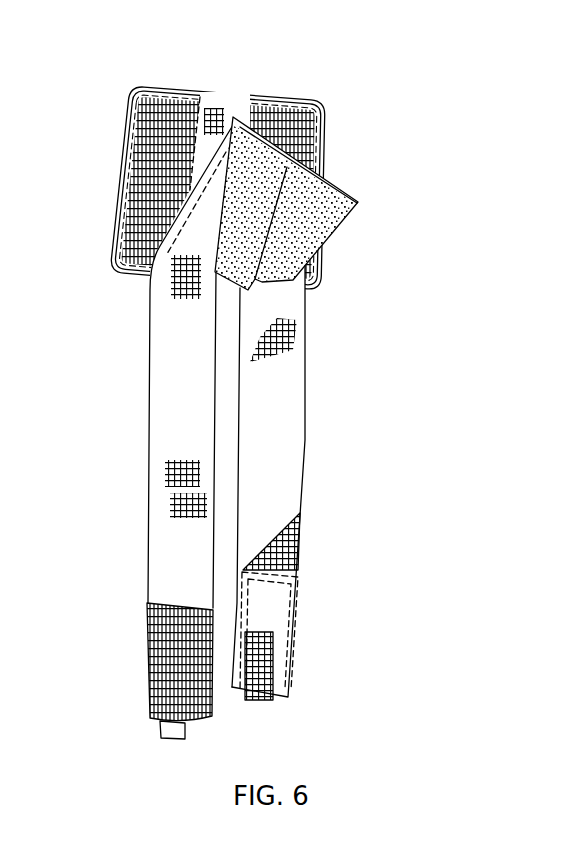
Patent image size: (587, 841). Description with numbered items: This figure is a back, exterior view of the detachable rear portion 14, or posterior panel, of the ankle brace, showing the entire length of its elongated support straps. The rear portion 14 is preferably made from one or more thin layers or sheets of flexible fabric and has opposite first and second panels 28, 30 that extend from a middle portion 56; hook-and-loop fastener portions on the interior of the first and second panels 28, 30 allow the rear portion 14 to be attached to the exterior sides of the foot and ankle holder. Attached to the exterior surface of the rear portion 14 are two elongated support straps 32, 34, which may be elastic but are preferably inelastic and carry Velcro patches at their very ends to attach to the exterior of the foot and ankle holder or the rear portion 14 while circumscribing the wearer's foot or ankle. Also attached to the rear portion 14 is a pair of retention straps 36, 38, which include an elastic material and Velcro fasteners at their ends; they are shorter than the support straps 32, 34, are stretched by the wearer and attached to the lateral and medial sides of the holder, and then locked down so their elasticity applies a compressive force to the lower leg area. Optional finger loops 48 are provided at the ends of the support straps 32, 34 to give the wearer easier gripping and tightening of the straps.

The rear portion 14 is at (229, 70).
The first panel 28 is at (131, 143).
The second panel 30 is at (328, 126).
The elongated support strap 32 is at (158, 512).
The elongated support strap 34 is at (297, 476).
The retention strap 36 is at (250, 280).
The retention strap 38 is at (338, 217).
The finger loop 48 is at (183, 740).
The middle portion 56 is at (233, 110).